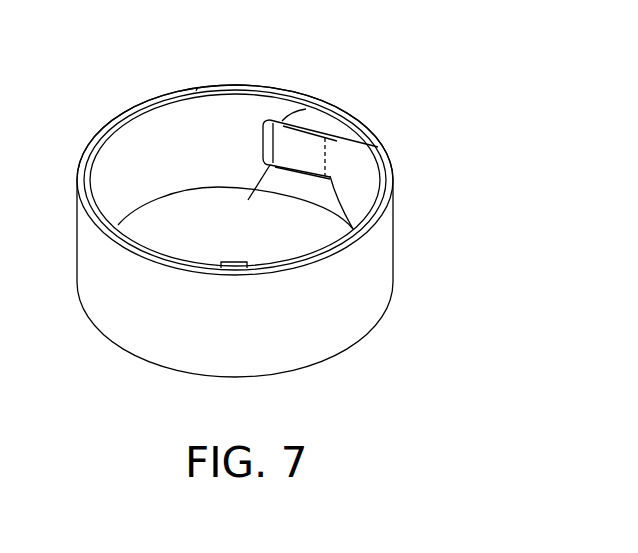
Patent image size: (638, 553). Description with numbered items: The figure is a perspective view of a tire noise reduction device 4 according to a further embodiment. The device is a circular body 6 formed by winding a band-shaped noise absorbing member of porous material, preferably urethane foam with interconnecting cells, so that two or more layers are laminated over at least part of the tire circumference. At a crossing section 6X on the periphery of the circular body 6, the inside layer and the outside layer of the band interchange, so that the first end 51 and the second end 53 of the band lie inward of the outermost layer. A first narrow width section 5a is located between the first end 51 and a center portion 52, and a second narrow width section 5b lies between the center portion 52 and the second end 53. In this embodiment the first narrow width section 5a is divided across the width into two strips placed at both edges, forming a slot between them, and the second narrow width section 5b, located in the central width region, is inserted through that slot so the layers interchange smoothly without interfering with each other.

The tire noise reduction device 4 is at (113, 100).
The circular body 6 is at (235, 157).
The crossing section 6X is at (370, 115).
The first narrow width section 5a is at (282, 181).
The second narrow width section 5b is at (326, 160).
The first end 51 is at (135, 241).
The center portion 52 is at (158, 345).
The second end 53 is at (246, 266).